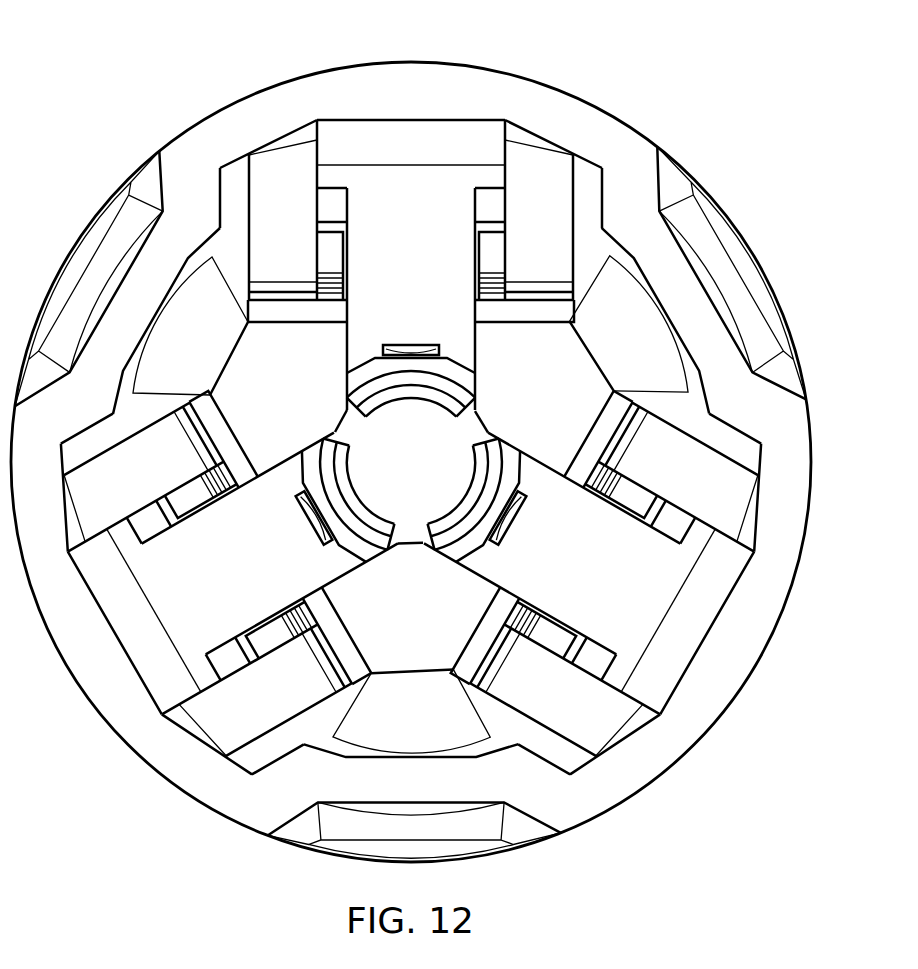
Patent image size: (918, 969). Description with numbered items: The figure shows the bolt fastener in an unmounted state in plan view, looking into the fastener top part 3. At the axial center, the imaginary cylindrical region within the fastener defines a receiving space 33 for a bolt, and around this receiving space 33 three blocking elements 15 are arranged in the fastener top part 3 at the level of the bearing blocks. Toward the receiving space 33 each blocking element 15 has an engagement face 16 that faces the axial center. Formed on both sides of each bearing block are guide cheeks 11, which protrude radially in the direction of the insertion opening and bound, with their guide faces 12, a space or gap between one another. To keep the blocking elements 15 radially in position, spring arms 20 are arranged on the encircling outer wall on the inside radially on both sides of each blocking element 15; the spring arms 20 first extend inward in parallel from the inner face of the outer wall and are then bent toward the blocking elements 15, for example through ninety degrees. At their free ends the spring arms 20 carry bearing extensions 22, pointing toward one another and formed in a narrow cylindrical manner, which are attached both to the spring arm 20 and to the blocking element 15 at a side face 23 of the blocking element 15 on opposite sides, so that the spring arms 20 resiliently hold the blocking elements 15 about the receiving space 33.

The fastener top part 3 is at (603, 70).
The guide cheeks 11 is at (285, 313).
The guide faces 12 is at (302, 453).
The blocking elements 15 is at (395, 288).
The engagement face 16 is at (412, 388).
The spring arms 20 is at (284, 188).
The bearing extensions 22 is at (328, 303).
The side face 23 is at (477, 350).
The receiving space 33 is at (395, 478).